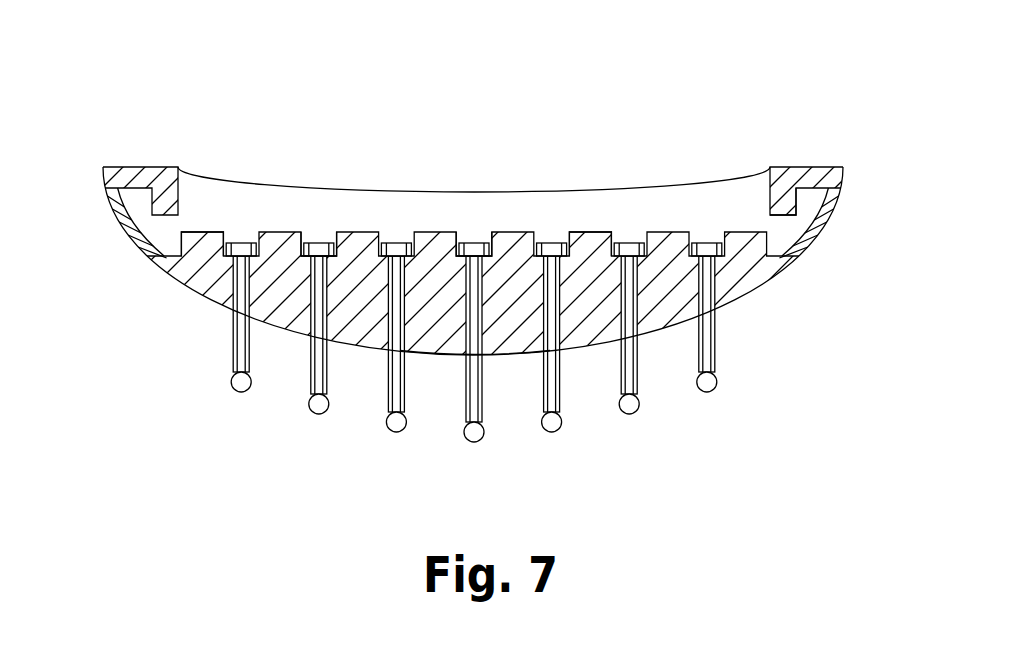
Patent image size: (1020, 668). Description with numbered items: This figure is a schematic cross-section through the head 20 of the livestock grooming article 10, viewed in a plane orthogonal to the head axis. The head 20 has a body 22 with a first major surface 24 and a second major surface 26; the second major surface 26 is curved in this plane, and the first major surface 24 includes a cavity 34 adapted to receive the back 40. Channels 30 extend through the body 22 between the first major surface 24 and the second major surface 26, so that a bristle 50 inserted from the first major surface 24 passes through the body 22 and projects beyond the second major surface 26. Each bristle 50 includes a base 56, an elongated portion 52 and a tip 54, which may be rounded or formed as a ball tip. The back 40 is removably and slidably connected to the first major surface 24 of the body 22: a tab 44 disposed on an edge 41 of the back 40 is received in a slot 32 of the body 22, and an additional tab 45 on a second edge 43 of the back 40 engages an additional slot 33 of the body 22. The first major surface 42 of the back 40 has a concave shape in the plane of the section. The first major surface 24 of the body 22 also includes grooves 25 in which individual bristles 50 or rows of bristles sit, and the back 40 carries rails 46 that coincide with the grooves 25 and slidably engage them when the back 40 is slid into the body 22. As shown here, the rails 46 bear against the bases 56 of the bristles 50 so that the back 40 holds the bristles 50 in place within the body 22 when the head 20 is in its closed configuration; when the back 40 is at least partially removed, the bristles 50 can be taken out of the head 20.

The livestock grooming article 10 is at (474, 114).
The head 20 is at (457, 319).
The body 22 is at (750, 291).
The first major surface 24 is at (601, 246).
The groove 25 is at (215, 232).
The second major surface 26 is at (663, 330).
The channel 30 is at (232, 275).
The slot 32 is at (112, 202).
The additional slot 33 is at (827, 192).
The cavity 34 is at (786, 235).
The back 40 is at (240, 158).
The edge 41 is at (140, 210).
The first major surface 42 is at (321, 190).
The second edge 43 is at (813, 235).
The tab 44 is at (504, 244).
The additional tab 45 is at (808, 212).
The rail 46 is at (343, 247).
The bristle 50 is at (457, 319).
The elongated portion 52 is at (233, 355).
The tip 54 is at (250, 388).
The base 56 is at (237, 246).